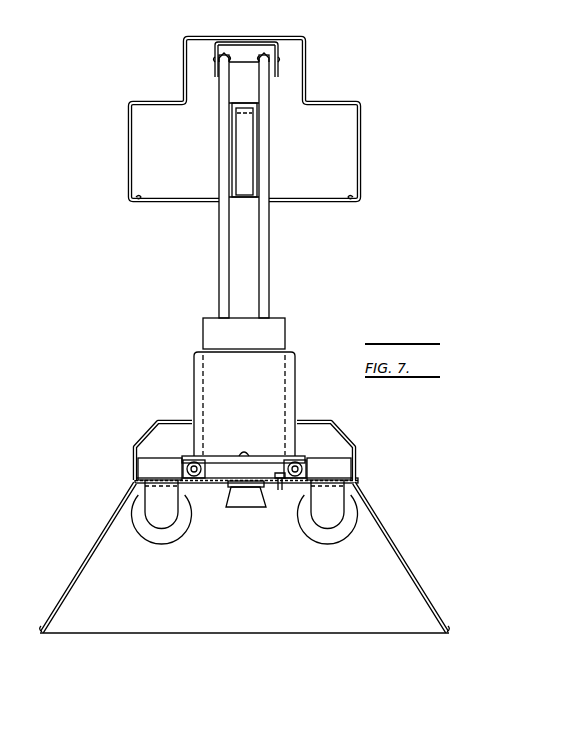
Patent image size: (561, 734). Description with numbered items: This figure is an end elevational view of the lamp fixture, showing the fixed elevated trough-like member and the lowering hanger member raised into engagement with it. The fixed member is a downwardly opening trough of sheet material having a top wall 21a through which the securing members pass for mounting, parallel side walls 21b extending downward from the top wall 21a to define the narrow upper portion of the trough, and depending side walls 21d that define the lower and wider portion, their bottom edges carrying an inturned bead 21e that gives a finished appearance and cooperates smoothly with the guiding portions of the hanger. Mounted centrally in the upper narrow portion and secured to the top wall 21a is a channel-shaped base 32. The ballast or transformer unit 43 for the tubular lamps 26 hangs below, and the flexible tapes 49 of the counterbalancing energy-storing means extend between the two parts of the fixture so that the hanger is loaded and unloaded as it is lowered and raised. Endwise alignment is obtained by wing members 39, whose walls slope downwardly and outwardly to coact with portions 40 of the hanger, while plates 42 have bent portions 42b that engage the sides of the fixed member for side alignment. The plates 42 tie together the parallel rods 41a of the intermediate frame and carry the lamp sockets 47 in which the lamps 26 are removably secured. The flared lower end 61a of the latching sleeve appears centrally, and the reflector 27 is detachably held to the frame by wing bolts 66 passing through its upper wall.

The top wall 21a is at (252, 38).
The side walls 21b is at (185, 74).
The depending side walls 21d is at (129, 167).
The inturned bead 21e is at (168, 106).
The channel-shaped base 32 is at (283, 43).
The wing members 39 is at (244, 150).
The portions of the lowering hanger member 40 is at (286, 322).
The rods 41a is at (190, 464).
The plates 42 is at (211, 484).
The bent portions 42b is at (140, 445).
The ballast or transformer unit 43 is at (244, 404).
The lamp sockets 47 is at (244, 469).
The tapes 49 is at (218, 266).
The lamps 26 is at (163, 545).
The reflector 27 is at (376, 501).
The flared lower end of sleeve 61a is at (252, 507).
The wing bolts 66 is at (279, 490).